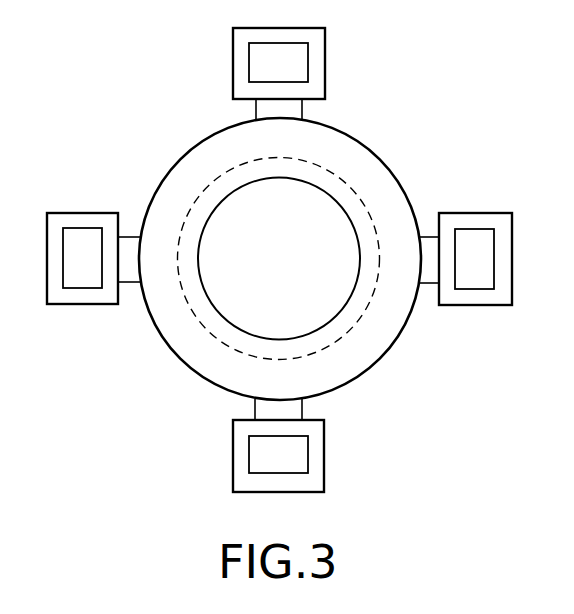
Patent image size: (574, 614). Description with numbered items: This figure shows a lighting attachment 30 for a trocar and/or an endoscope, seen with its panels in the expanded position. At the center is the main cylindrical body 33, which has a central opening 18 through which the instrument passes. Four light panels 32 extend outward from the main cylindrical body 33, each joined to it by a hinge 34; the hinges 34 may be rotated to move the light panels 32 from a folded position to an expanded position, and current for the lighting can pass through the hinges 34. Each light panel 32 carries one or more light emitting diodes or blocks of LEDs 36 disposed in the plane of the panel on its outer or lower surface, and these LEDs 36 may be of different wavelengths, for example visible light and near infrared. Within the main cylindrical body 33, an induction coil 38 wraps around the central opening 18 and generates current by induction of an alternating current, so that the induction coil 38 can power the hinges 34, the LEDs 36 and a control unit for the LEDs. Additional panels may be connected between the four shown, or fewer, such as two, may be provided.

The central opening 18 is at (291, 270).
The lighting attachment 30 is at (467, 84).
The light panel 32 is at (240, 37).
The main cylindrical body 33 is at (372, 178).
The hinge 34 is at (297, 108).
The light emitting diodes 36 is at (293, 60).
The induction coil 38 is at (218, 326).